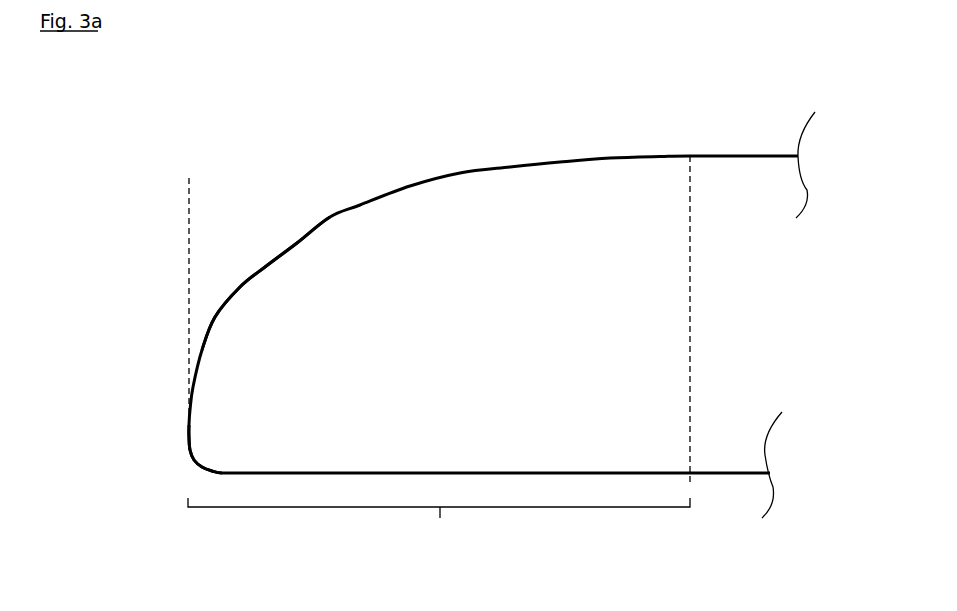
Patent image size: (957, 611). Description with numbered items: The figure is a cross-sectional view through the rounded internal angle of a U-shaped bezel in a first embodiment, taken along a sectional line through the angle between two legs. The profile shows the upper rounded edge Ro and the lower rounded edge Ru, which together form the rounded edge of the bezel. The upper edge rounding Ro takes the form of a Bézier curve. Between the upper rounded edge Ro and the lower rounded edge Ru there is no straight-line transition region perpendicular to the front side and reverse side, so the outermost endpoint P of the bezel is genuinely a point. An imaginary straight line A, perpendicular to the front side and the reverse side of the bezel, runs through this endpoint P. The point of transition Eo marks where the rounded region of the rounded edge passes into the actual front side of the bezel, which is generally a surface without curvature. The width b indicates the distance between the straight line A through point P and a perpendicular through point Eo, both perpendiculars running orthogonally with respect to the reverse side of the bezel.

The straight line A is at (180, 297).
The point of transition Eo is at (690, 150).
The upper rounded edge Ro is at (320, 217).
The outermost endpoint P is at (183, 437).
The lower rounded edge Ru is at (195, 460).
The width of the region b is at (439, 524).